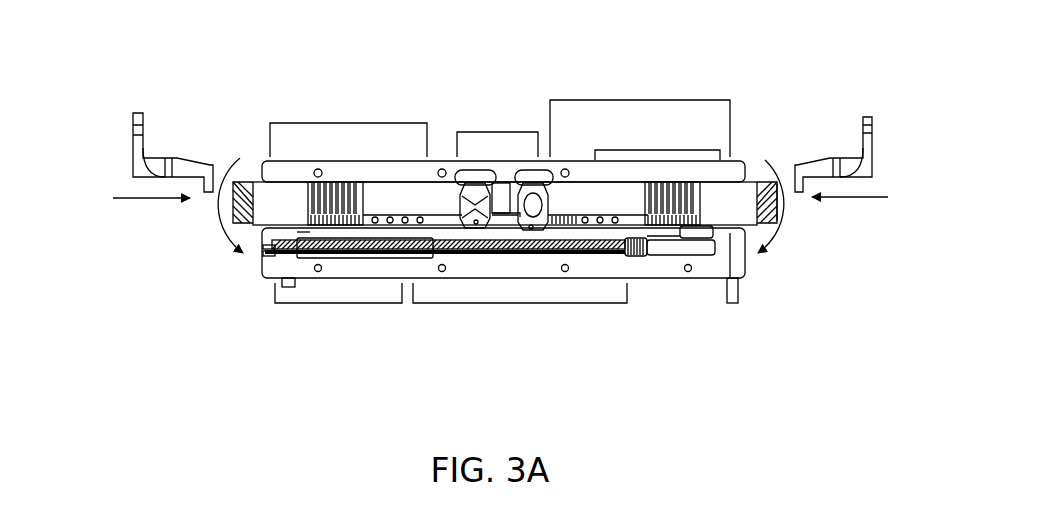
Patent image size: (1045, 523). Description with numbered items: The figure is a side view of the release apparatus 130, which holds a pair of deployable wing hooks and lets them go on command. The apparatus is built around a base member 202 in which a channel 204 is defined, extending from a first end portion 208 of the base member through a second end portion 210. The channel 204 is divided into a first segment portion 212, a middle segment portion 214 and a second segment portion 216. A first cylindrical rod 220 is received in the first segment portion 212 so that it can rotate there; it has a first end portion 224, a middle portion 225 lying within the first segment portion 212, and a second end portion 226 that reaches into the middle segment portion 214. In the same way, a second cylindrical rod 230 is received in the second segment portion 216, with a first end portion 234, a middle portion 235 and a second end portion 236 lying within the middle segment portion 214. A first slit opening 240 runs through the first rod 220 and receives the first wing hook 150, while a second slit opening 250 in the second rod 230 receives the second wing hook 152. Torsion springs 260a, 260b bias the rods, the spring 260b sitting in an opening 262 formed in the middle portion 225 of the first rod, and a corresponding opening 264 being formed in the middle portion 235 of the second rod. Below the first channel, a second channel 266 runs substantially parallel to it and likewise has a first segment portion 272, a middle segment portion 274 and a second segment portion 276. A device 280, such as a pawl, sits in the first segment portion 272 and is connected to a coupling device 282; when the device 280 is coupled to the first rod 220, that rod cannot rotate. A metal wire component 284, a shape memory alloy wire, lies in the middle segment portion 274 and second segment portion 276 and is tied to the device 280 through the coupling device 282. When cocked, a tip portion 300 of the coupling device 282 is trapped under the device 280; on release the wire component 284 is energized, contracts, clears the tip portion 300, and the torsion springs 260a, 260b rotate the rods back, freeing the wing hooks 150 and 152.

The release apparatus 130 is at (85, 58).
The first wing hook 150 is at (880, 157).
The second wing hook 152 is at (128, 118).
The base member 202 is at (478, 321).
The channel 204 is at (570, 227).
The first end portion 208 is at (747, 156).
The second end portion 210 is at (262, 155).
The first segment portion 212 is at (628, 100).
The middle segment portion 214 is at (510, 132).
The second segment portion 216 is at (363, 123).
The first cylindrical rod 220 is at (743, 228).
The first end portion 224 is at (773, 175).
The middle portion 225 is at (646, 150).
The second end portion 226 is at (535, 234).
The second cylindrical rod 230 is at (260, 248).
The first end portion 234 is at (240, 253).
The middle portion 235 is at (346, 259).
The second end portion 236 is at (470, 167).
The first slit opening 240 is at (778, 211).
The second slit opening 250 is at (238, 203).
The torsion spring 260a is at (330, 184).
The torsion spring 260b is at (684, 184).
The opening 262 is at (742, 228).
The opening 264 is at (300, 233).
The second channel 266 is at (738, 296).
The first segment portion 272 is at (738, 292).
The middle segment portion 274 is at (443, 305).
The second segment portion 276 is at (355, 308).
The device 280 is at (600, 257).
The coupling device 282 is at (633, 259).
The metal wire component 284 is at (282, 259).
The tip portion 300 is at (672, 267).